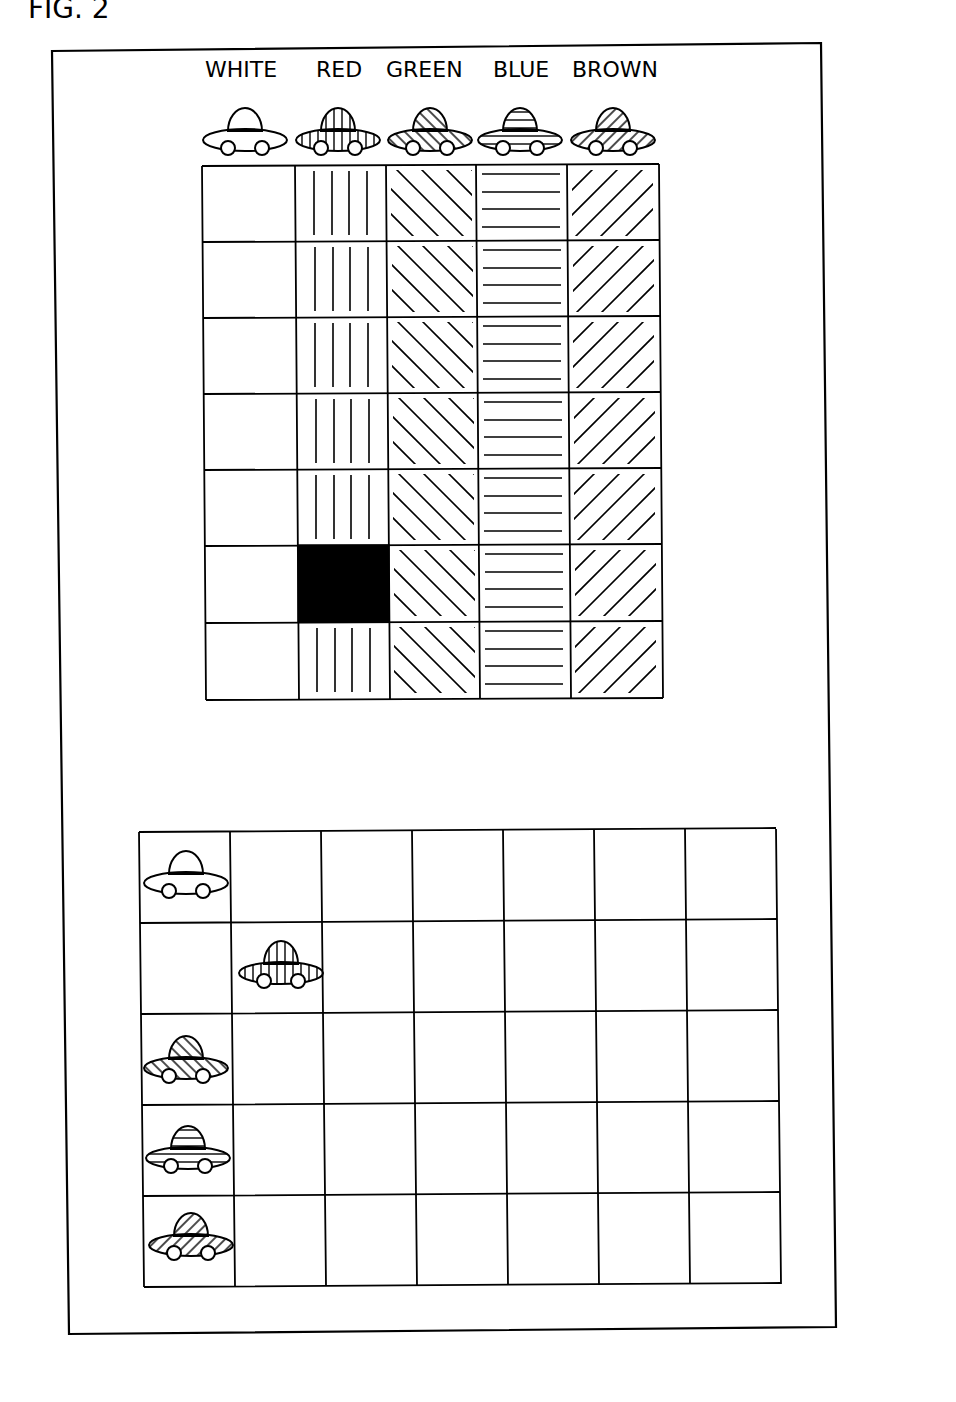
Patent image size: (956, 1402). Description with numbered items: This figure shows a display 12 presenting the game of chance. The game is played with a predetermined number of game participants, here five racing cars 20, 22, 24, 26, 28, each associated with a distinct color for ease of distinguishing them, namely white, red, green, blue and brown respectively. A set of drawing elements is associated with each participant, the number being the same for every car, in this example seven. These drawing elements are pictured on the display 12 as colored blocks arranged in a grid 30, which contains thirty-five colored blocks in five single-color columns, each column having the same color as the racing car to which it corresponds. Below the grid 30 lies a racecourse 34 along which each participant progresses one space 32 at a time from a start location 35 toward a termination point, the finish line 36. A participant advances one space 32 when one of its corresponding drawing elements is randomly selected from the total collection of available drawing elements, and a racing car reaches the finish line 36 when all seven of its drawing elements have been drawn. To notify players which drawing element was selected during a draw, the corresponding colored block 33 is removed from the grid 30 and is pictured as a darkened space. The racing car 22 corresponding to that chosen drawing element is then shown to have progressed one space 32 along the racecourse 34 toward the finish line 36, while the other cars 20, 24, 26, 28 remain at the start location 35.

The display 12 is at (830, 703).
The racing car 20 is at (258, 120).
The racing car 22 is at (350, 121).
The racing car 24 is at (446, 117).
The racing car 26 is at (532, 122).
The racing car 28 is at (626, 121).
The grid 30 is at (661, 496).
The space 32 is at (283, 1288).
The colored block 33 is at (298, 597).
The racecourse 34 is at (462, 779).
The start location 35 is at (187, 803).
The finish line 36 is at (722, 799).